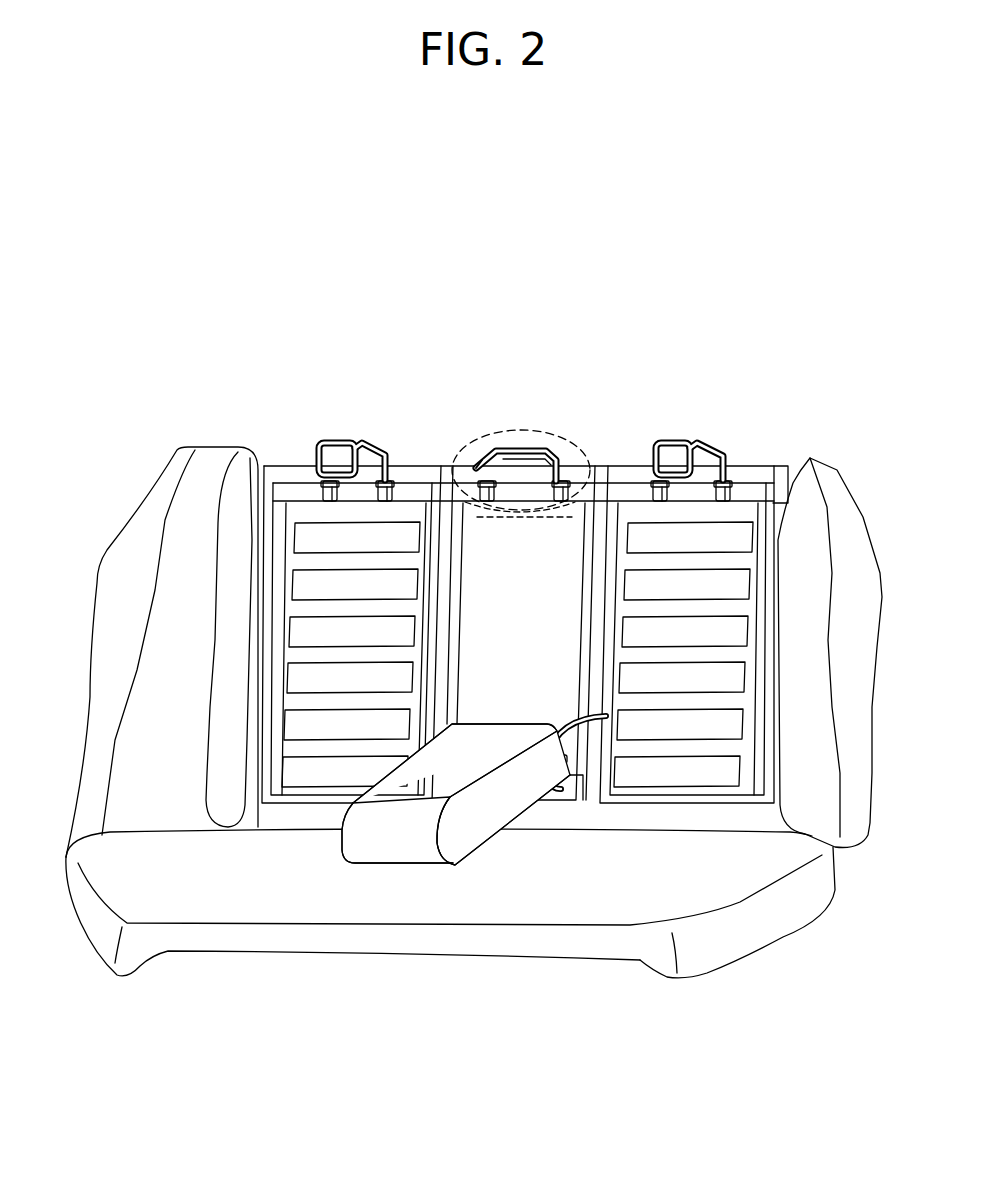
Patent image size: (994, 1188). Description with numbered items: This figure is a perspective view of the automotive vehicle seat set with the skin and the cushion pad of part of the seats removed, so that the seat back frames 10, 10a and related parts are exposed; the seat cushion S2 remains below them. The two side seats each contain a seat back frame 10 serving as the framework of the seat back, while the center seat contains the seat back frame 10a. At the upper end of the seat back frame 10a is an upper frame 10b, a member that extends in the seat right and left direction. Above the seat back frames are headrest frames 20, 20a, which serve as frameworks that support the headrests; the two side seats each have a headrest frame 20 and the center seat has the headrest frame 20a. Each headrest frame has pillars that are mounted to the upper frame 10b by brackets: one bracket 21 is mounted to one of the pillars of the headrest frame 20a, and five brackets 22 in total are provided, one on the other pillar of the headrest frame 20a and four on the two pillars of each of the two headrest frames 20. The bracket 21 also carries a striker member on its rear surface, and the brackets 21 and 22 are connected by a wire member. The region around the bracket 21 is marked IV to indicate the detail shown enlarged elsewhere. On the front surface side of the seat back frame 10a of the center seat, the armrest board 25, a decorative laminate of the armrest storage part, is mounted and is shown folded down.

The seat back frame 10 is at (298, 510).
The seat back frame 10a is at (592, 500).
The upper frame 10b is at (456, 500).
The headrest frame 20 is at (373, 440).
The headrest frame 20a is at (546, 450).
The bracket 21 is at (477, 456).
The bracket 22 is at (319, 489).
The armrest board 25 is at (512, 683).
The rear seat S2 is at (742, 932).
The section indicator IV is at (510, 427).